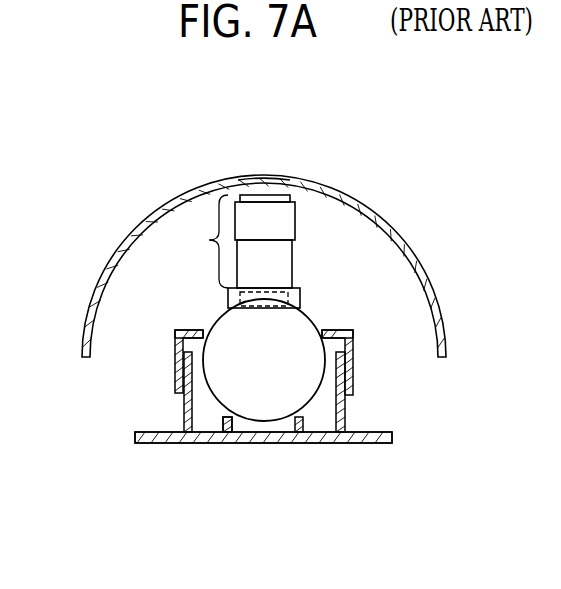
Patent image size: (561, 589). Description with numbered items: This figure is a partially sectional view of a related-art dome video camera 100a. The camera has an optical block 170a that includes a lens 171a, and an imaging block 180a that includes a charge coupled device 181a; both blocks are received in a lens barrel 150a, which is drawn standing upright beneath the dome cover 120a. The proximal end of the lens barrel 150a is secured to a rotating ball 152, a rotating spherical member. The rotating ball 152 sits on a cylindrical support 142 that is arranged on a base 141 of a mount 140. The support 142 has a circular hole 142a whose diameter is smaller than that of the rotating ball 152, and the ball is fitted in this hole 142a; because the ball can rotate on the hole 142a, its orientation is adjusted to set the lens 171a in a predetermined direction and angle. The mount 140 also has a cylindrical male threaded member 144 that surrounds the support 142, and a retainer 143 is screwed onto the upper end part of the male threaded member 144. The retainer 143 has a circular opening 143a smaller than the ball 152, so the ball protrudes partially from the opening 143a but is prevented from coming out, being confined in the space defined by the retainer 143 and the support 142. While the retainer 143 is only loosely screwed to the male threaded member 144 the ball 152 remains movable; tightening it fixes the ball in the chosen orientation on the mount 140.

The dome video camera 100a is at (232, 161).
The dome cover 120a is at (343, 197).
The lens 171a is at (247, 186).
The optical block 170a is at (205, 240).
The lens barrel 150a is at (278, 253).
The imaging block 180a is at (228, 300).
The charge coupled device (CCD) 181a is at (232, 297).
The rotating ball 152 is at (223, 388).
The retainer 143 is at (350, 357).
The circular opening 143a is at (322, 332).
The cylindrical male threaded member 144 is at (340, 403).
The cylindrical support 142 is at (218, 425).
The circular hole 142a is at (243, 427).
The mount 140 is at (322, 437).
The base 141 is at (263, 437).